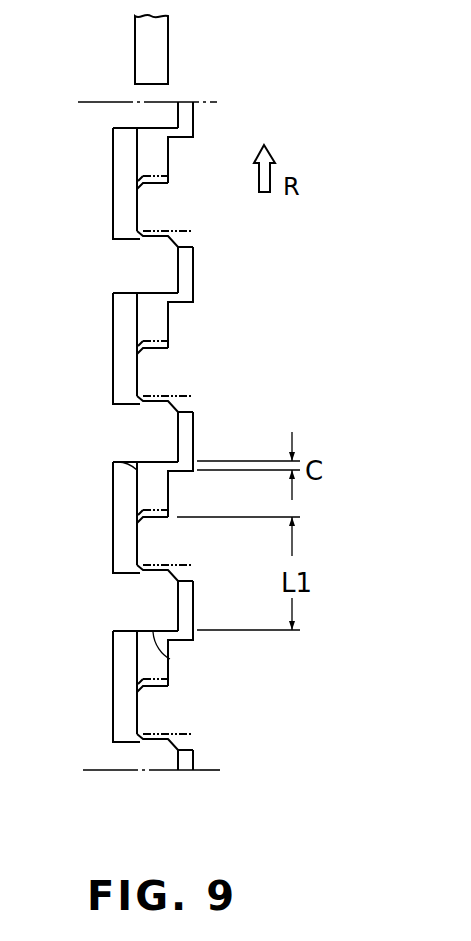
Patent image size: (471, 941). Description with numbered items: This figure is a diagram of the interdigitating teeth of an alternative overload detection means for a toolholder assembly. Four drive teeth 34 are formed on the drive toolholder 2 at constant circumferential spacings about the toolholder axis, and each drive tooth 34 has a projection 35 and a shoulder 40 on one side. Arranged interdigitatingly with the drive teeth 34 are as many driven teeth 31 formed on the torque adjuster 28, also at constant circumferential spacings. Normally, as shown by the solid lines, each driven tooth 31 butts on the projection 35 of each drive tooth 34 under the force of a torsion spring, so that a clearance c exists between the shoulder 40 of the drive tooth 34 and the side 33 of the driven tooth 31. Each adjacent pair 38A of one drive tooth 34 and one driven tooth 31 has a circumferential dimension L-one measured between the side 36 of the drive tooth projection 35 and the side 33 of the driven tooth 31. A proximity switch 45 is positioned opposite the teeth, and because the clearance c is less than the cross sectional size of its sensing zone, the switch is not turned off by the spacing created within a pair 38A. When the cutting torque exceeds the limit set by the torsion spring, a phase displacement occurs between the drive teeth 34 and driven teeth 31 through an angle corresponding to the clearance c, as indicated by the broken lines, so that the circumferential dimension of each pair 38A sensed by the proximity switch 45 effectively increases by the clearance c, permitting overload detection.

The proximity switch 45 is at (147, 42).
The driven tooth 31 is at (167, 108).
The drive tooth 34 is at (132, 197).
The side of driven tooth 33 is at (140, 472).
The shoulder 40 is at (178, 481).
The side of drive tooth projection 36 is at (165, 510).
The projection 35 is at (144, 541).
The adjacent pair of drive and driven teeth 38A is at (200, 583).
The torque adjuster 28 is at (103, 760).
The drive toolholder 2 is at (212, 757).